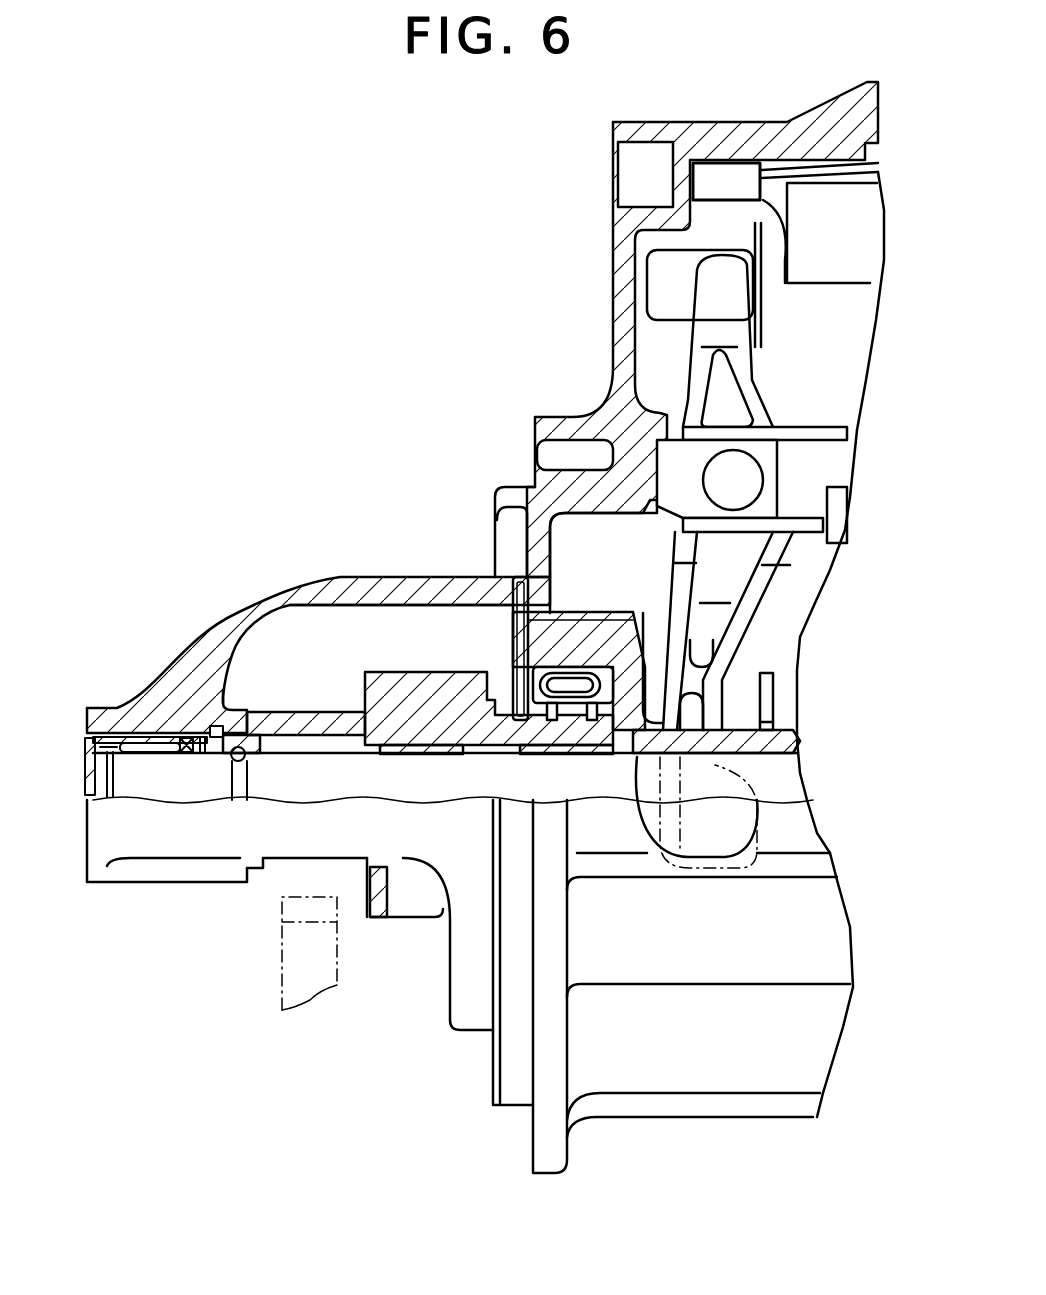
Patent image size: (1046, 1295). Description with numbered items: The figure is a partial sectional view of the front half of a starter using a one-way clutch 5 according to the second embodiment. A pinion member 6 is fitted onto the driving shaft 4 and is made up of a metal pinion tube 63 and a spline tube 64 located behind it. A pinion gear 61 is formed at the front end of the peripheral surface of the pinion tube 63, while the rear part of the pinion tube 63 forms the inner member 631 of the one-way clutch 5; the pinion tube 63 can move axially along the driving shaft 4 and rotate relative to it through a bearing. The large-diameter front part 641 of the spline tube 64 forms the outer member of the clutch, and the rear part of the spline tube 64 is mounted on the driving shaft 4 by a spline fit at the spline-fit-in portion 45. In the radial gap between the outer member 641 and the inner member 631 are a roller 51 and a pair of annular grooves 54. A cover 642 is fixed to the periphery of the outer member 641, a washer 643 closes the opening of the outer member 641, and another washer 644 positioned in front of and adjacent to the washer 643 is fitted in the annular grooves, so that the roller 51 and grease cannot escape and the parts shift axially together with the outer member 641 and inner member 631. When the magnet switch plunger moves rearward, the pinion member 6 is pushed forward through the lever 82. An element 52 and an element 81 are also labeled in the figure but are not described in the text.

The driving shaft 4 is at (277, 780).
The one-way clutch 5 is at (658, 651).
The pinion member 6 is at (341, 712).
The spline-fit-in portion 45 is at (612, 750).
The roller 51 is at (573, 680).
The rotor 52 is at (405, 690).
The annular grooves 54 is at (542, 738).
The pinion gear 61 is at (382, 688).
The pinion tube 63 is at (346, 660).
The inner member 631 is at (420, 800).
The spline tube 64 is at (522, 746).
The large-diameter front part 641 is at (585, 612).
The cover 642 is at (633, 613).
The washer 643 is at (518, 600).
The washer 644 is at (527, 660).
The recess 81 is at (663, 293).
The lever 82 is at (695, 383).